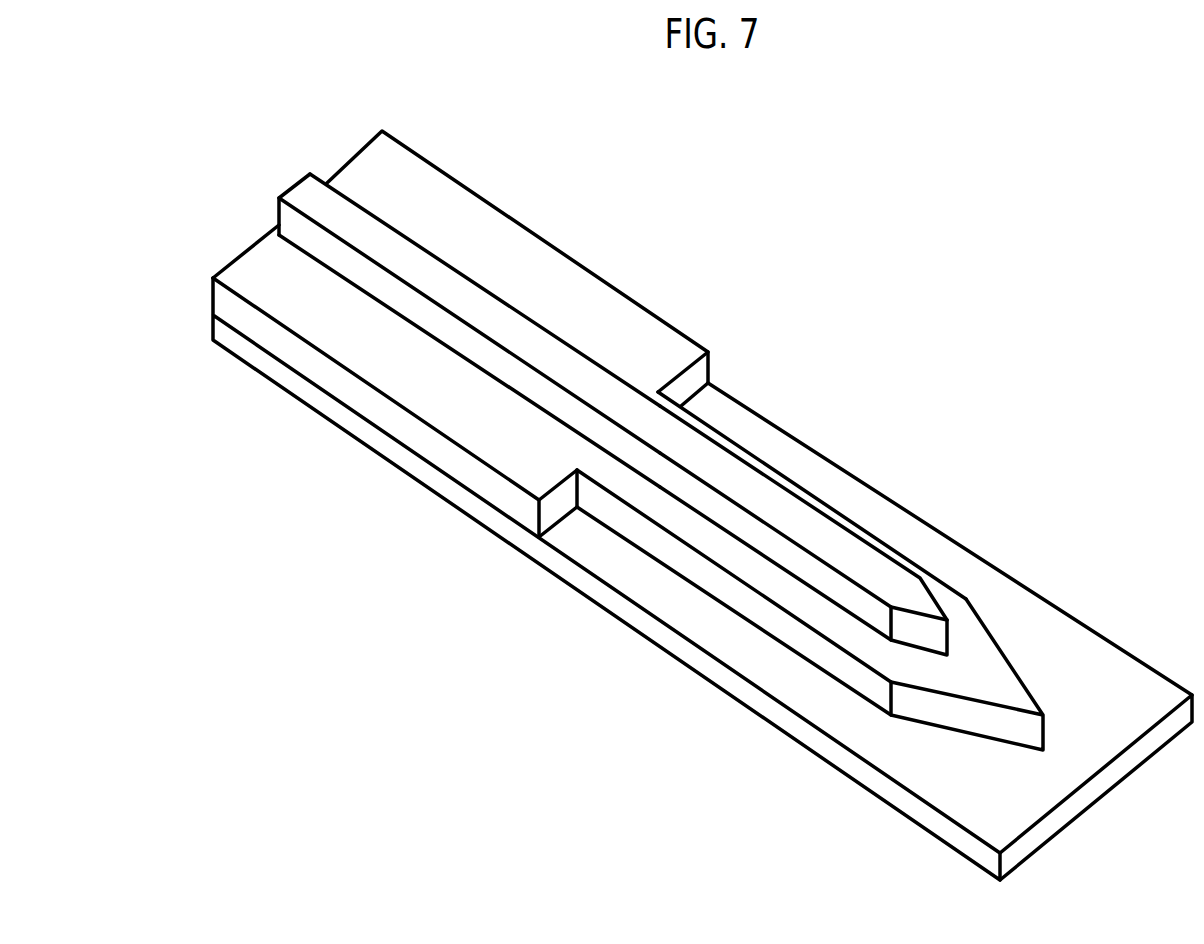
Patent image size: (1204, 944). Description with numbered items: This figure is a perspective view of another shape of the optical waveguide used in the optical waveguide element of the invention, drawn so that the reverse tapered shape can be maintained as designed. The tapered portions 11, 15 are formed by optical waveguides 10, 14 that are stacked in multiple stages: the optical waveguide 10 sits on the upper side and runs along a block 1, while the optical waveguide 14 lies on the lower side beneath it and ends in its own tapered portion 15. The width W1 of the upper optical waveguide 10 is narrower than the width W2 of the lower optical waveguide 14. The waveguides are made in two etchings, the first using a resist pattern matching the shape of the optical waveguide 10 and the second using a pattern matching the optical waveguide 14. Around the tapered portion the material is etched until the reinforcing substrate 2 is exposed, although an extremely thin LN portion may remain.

The block / lower cladding body 1 is at (312, 300).
The reinforcing substrate 2 is at (1103, 667).
The optical waveguide 10 is at (487, 305).
The tapered portion 11 is at (933, 596).
The optical waveguide 14 is at (765, 608).
The tapered portion 15 is at (953, 708).
The width of the optical waveguide 10 W1 is at (713, 438).
The width of the optical waveguide 14 W2 is at (803, 487).